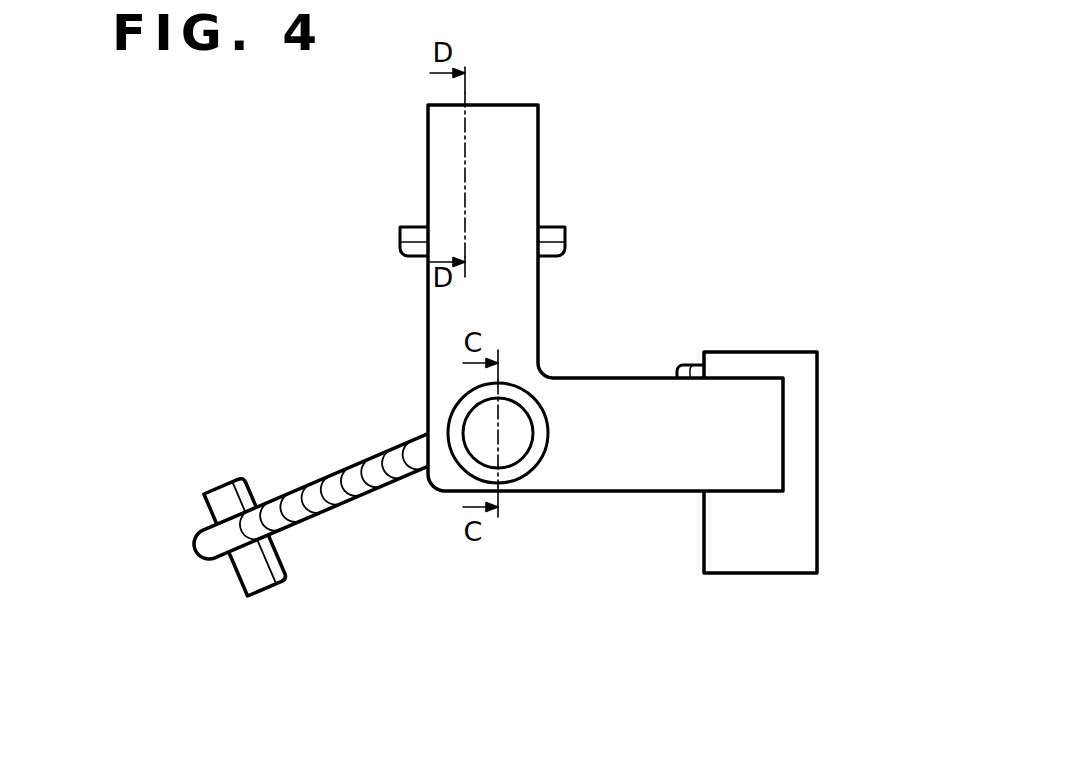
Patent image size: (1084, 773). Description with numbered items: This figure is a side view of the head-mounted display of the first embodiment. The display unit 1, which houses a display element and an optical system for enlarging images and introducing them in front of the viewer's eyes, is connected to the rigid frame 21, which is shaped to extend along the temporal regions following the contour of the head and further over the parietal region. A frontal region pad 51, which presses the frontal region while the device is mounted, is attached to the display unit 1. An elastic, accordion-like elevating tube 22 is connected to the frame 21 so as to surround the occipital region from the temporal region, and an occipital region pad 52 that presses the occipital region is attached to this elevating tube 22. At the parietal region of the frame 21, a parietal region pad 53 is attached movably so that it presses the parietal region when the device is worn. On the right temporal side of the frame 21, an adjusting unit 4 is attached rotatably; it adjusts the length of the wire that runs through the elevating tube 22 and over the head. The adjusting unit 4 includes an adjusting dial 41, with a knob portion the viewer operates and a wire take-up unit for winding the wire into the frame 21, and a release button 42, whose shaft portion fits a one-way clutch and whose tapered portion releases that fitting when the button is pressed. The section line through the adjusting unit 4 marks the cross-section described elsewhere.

The display unit 1 is at (805, 400).
The frame 21 is at (438, 140).
The elevating tube 22 is at (295, 505).
The adjusting unit 4 is at (555, 528).
The adjusting dial 41 is at (535, 450).
The release button 42 is at (512, 453).
The frontal region pad 51 is at (690, 366).
The occipital region pad 52 is at (253, 559).
The parietal region pad 53 is at (405, 234).